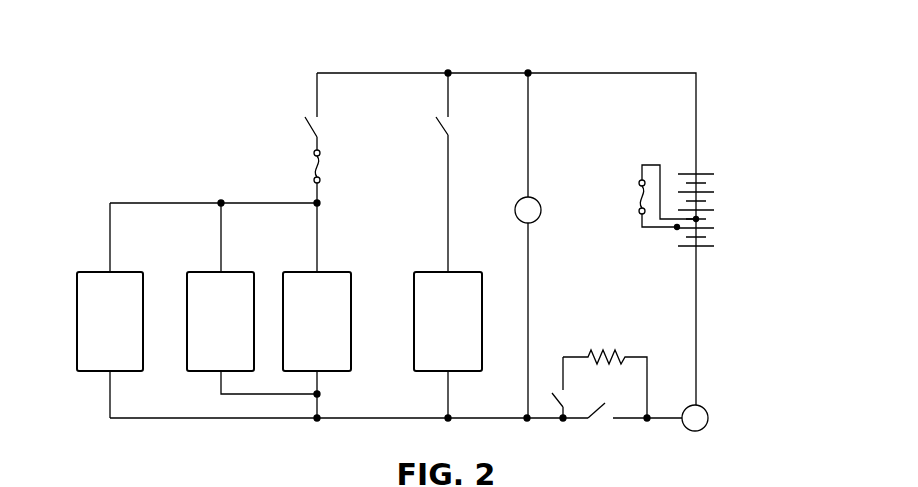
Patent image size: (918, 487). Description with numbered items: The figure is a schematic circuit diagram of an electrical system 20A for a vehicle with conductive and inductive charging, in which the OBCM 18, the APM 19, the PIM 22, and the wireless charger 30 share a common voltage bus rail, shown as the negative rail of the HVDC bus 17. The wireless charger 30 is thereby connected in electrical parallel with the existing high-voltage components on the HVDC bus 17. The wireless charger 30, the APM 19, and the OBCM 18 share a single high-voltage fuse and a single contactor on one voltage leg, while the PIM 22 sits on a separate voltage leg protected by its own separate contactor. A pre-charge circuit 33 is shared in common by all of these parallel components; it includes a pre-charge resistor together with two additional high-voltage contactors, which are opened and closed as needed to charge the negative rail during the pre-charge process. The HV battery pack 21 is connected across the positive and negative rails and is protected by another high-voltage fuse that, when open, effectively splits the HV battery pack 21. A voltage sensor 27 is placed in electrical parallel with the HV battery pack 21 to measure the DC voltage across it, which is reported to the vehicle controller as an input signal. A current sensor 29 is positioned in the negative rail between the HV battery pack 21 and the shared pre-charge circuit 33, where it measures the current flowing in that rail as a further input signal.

The HVDC bus 17 is at (656, 54).
The electrical system 20A is at (214, 245).
The HV battery pack 21 is at (734, 210).
The voltage sensor 27 is at (541, 210).
The current sensor 29 is at (708, 418).
The pre-charge circuit 33 is at (607, 320).
The wireless charger 30 is at (101, 306).
The OBCM 18 is at (212, 306).
The APM 19 is at (308, 306).
The PIM 22 is at (439, 306).